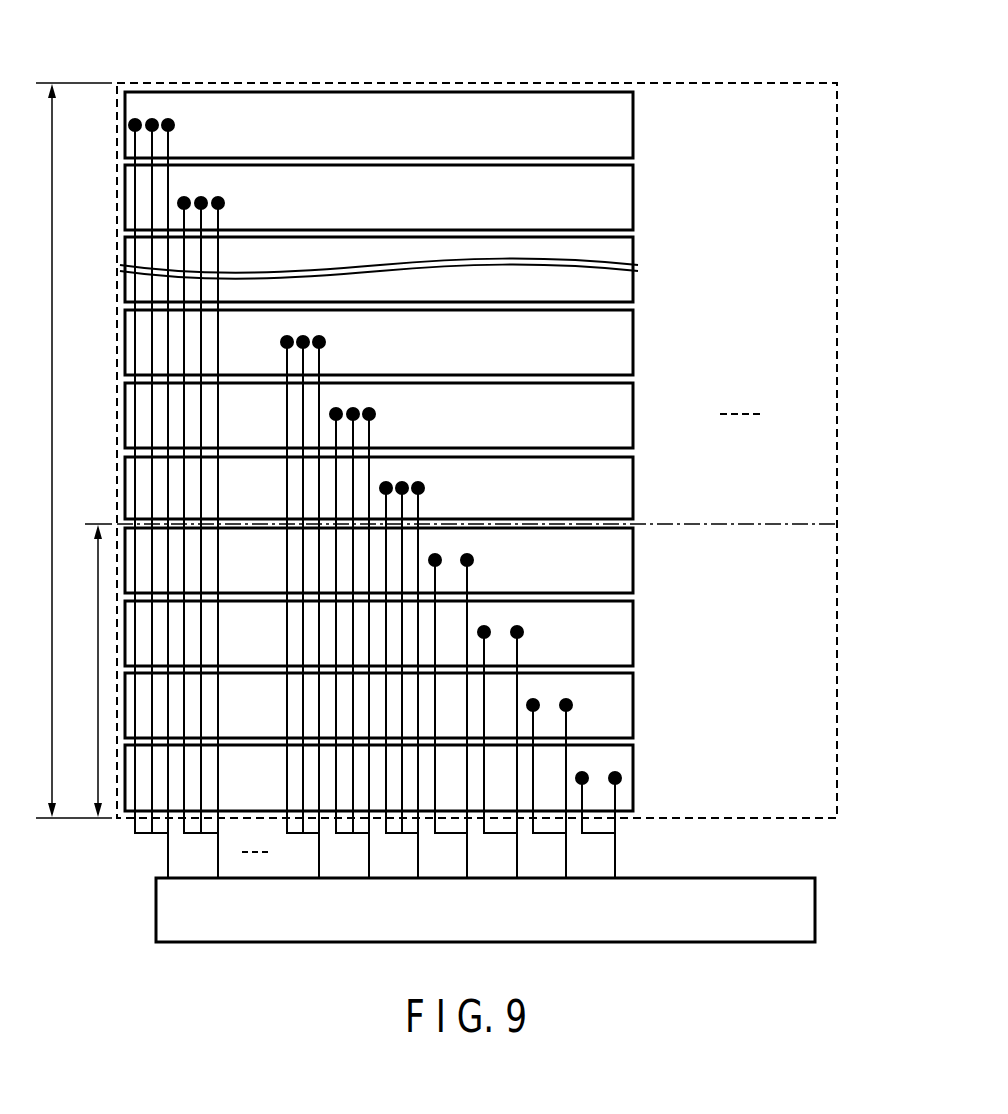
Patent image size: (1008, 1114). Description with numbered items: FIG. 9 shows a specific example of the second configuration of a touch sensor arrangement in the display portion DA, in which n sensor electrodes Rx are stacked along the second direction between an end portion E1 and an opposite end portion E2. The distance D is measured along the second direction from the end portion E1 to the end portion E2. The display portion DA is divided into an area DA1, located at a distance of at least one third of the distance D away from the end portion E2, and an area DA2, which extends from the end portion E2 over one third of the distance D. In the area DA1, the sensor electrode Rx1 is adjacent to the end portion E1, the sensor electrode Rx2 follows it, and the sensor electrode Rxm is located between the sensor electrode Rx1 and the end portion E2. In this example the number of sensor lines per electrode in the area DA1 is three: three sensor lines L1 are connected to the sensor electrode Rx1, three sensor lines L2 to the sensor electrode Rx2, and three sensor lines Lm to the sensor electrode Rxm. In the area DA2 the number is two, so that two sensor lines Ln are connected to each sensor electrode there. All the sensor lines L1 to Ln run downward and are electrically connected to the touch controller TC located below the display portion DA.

The end portion E1 is at (790, 78).
The end portion E2 is at (796, 826).
The sensor electrode Rx1 is at (636, 128).
The sensor electrode Rx2 is at (636, 199).
The sensor electrode Rxm is at (636, 490).
The sensor lines L1 is at (168, 215).
The sensor lines L2 is at (217, 360).
The sensor lines Lm is at (418, 514).
The sensor lines Ln is at (615, 803).
The area DA1 is at (810, 466).
The area DA2 is at (810, 631).
The display portion DA is at (124, 819).
The touch controller TC is at (816, 912).
The distance D is at (71, 450).